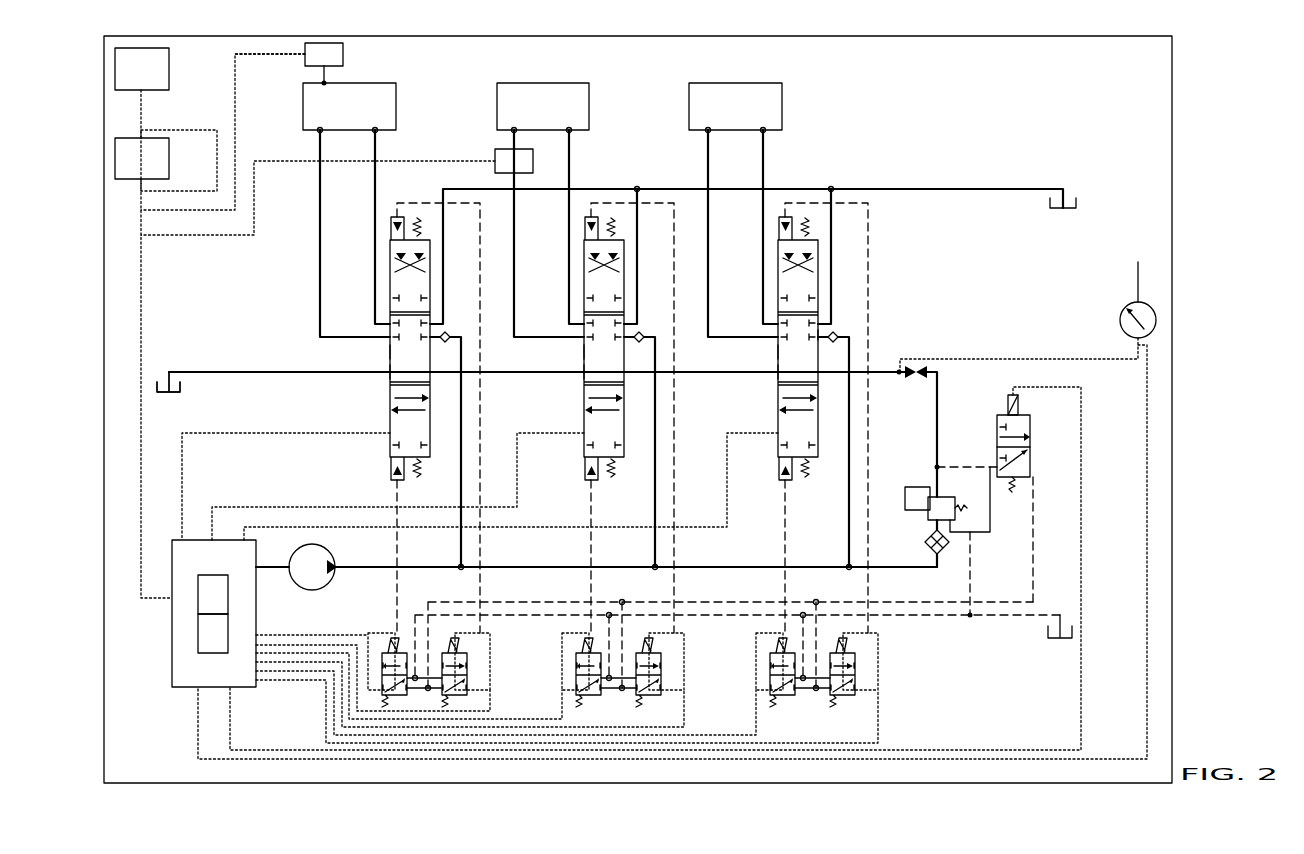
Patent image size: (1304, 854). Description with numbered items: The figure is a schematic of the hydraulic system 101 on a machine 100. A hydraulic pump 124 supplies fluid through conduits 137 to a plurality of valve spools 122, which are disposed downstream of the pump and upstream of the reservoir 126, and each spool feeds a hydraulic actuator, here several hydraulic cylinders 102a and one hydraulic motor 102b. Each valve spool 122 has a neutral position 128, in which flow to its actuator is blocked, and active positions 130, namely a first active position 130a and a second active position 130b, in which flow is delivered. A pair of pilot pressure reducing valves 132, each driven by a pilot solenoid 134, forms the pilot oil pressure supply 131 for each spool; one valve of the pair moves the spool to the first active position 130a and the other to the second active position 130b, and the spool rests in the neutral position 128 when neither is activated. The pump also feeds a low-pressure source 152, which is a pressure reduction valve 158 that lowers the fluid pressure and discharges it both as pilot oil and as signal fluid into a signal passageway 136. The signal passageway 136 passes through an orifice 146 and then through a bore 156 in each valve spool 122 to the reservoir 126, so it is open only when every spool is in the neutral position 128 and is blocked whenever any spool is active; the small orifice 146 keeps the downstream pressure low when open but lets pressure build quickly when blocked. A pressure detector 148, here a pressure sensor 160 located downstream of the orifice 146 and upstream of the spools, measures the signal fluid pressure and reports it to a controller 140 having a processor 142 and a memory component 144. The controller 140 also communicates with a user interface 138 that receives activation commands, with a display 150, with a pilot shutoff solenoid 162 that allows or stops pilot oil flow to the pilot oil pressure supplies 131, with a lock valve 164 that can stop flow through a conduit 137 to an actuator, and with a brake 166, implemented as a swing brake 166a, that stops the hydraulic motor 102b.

The machine 100 is at (980, 31).
The system 101 is at (981, 131).
The hydraulic cylinder 102a is at (548, 83).
The hydraulic motor 102b is at (346, 83).
The valve spool 122 is at (390, 351).
The hydraulic pump 124 is at (312, 590).
The reservoir 126 is at (157, 386).
The neutral position 128 is at (390, 370).
The active position 130 is at (430, 262).
The first active position 130a is at (657, 278).
The second active position 130b is at (499, 467).
The pilot oil pressure supply 131 is at (453, 601).
The pilot pressure reducing valve 132 is at (396, 694).
The pilot solenoid 134 is at (388, 642).
The signal passageway 136 is at (257, 374).
The conduit 137 is at (320, 184).
The user interface 138 is at (169, 159).
The controller 140 is at (197, 540).
The processor 142 is at (203, 582).
The memory component 144 is at (203, 652).
The orifice 146 is at (918, 368).
The pressure detector 148 is at (682, 498).
The display 150 is at (169, 68).
The low-pressure source 152 is at (931, 530).
The bore 156 is at (406, 370).
The pressure reduction valve 158 is at (917, 487).
The pressure sensor 160 is at (677, 510).
The pilot shutoff solenoid 162 is at (997, 432).
The lock valve 164 is at (497, 150).
The brake 166 is at (305, 60).
The swing brake 166a is at (270, 81).